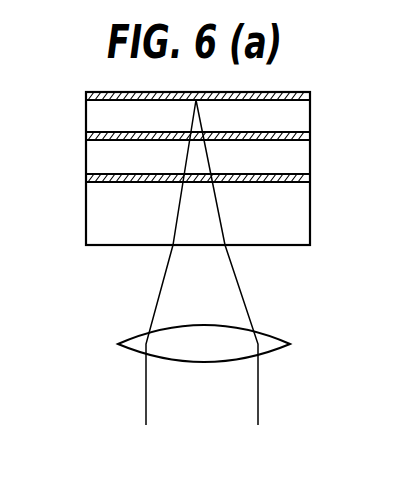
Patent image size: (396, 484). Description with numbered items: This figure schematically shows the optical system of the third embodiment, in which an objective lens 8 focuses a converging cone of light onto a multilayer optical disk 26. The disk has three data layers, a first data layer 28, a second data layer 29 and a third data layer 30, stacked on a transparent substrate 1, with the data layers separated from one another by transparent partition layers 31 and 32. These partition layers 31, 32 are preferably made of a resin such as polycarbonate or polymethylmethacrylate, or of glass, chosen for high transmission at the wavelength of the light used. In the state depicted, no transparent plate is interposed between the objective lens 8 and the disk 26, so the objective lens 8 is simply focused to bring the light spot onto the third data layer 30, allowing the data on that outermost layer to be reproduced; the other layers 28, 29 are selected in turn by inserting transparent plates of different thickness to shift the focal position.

The transparent substrate 1 is at (302, 217).
The objective lens 8 is at (290, 345).
The multilayer optical disk 26 is at (70, 95).
The first data layer 28 is at (310, 188).
The second data layer 29 is at (302, 137).
The third data layer 30 is at (312, 94).
The transparent partition layer 31 is at (302, 158).
The transparent partition layer 32 is at (302, 114).